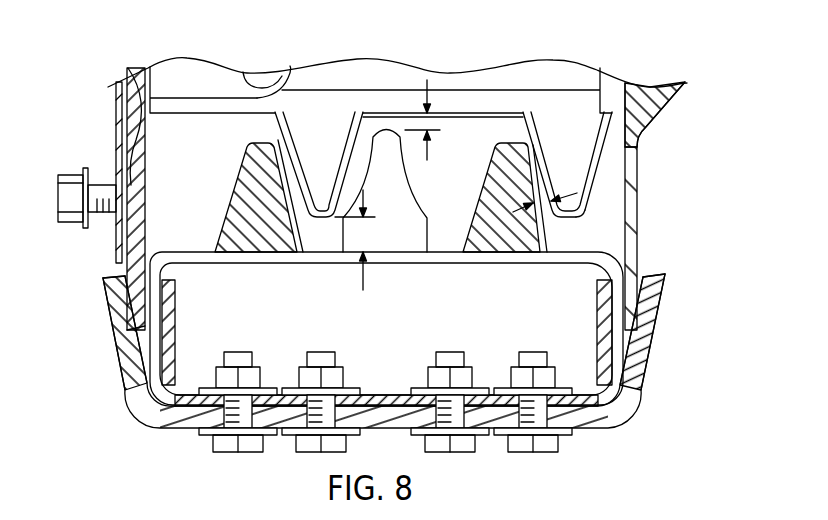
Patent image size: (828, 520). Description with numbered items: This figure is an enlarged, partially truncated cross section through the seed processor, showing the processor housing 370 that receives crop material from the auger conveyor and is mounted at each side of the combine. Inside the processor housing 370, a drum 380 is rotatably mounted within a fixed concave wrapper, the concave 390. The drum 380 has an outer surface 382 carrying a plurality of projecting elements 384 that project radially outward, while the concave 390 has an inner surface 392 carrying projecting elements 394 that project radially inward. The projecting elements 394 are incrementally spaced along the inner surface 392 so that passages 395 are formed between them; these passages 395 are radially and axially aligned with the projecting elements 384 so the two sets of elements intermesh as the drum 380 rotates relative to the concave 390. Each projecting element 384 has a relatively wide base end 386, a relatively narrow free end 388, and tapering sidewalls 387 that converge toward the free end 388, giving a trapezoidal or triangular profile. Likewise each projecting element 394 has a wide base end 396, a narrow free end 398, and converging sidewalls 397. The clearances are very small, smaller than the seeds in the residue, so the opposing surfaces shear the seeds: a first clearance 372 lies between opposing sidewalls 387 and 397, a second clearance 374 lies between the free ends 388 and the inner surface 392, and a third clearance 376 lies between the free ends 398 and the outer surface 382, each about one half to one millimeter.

The processor housing 370 is at (638, 416).
The first clearance 372 is at (577, 193).
The second clearance 374 is at (363, 190).
The third clearance 376 is at (427, 160).
The drum 380 is at (388, 70).
The outer surface 382 is at (382, 117).
The projecting elements 384 is at (317, 127).
The base end 386 is at (609, 135).
The sidewalls 387 is at (598, 160).
The free end 388 is at (580, 217).
The concave 390 is at (210, 266).
The inner surface 392 is at (187, 251).
The projecting elements 394 is at (394, 238).
The passages 395 is at (468, 143).
The base end 396 is at (288, 253).
The sidewalls 397 is at (234, 188).
The free end 398 is at (262, 145).